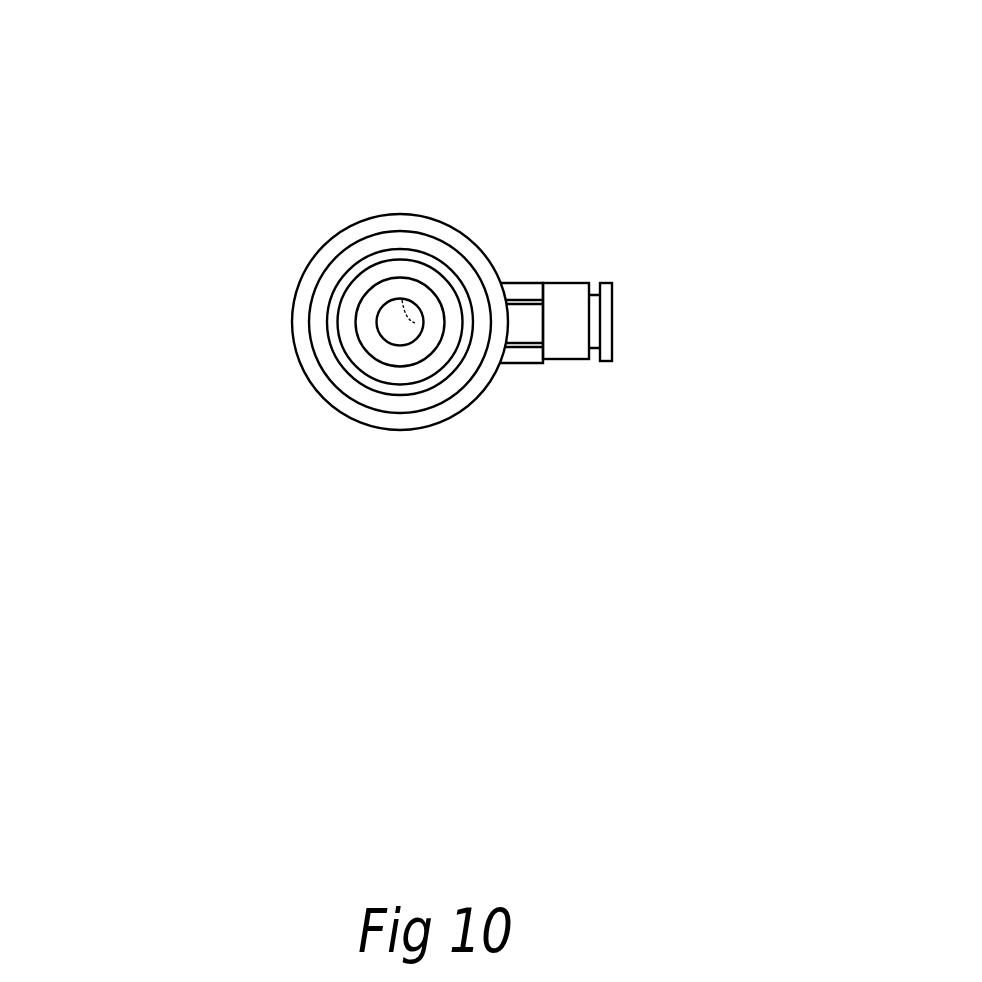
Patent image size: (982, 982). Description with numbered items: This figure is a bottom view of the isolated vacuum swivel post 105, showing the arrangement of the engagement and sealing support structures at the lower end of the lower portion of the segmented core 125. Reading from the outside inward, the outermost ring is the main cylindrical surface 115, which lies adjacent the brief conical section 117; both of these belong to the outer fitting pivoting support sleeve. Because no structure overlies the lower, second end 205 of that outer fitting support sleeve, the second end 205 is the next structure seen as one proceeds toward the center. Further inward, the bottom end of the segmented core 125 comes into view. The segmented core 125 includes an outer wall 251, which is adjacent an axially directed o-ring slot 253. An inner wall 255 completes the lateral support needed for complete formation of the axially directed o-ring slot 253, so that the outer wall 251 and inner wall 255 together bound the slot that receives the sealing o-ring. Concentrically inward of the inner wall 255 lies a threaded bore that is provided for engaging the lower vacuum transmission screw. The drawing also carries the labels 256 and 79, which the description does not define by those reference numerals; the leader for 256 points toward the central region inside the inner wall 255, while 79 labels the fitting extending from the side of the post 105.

The vacuum swivel post 105 is at (254, 225).
The conical section 117 is at (408, 223).
The main cylindrical surface 115 is at (468, 235).
The second end 205 is at (370, 248).
The outer wall 251 is at (347, 362).
The o-ring slot 253 is at (383, 373).
The inner wall 255 is at (368, 315).
The inner wall 256 is at (420, 320).
The segmented core 125 is at (456, 386).
The fitting 79 is at (613, 328).